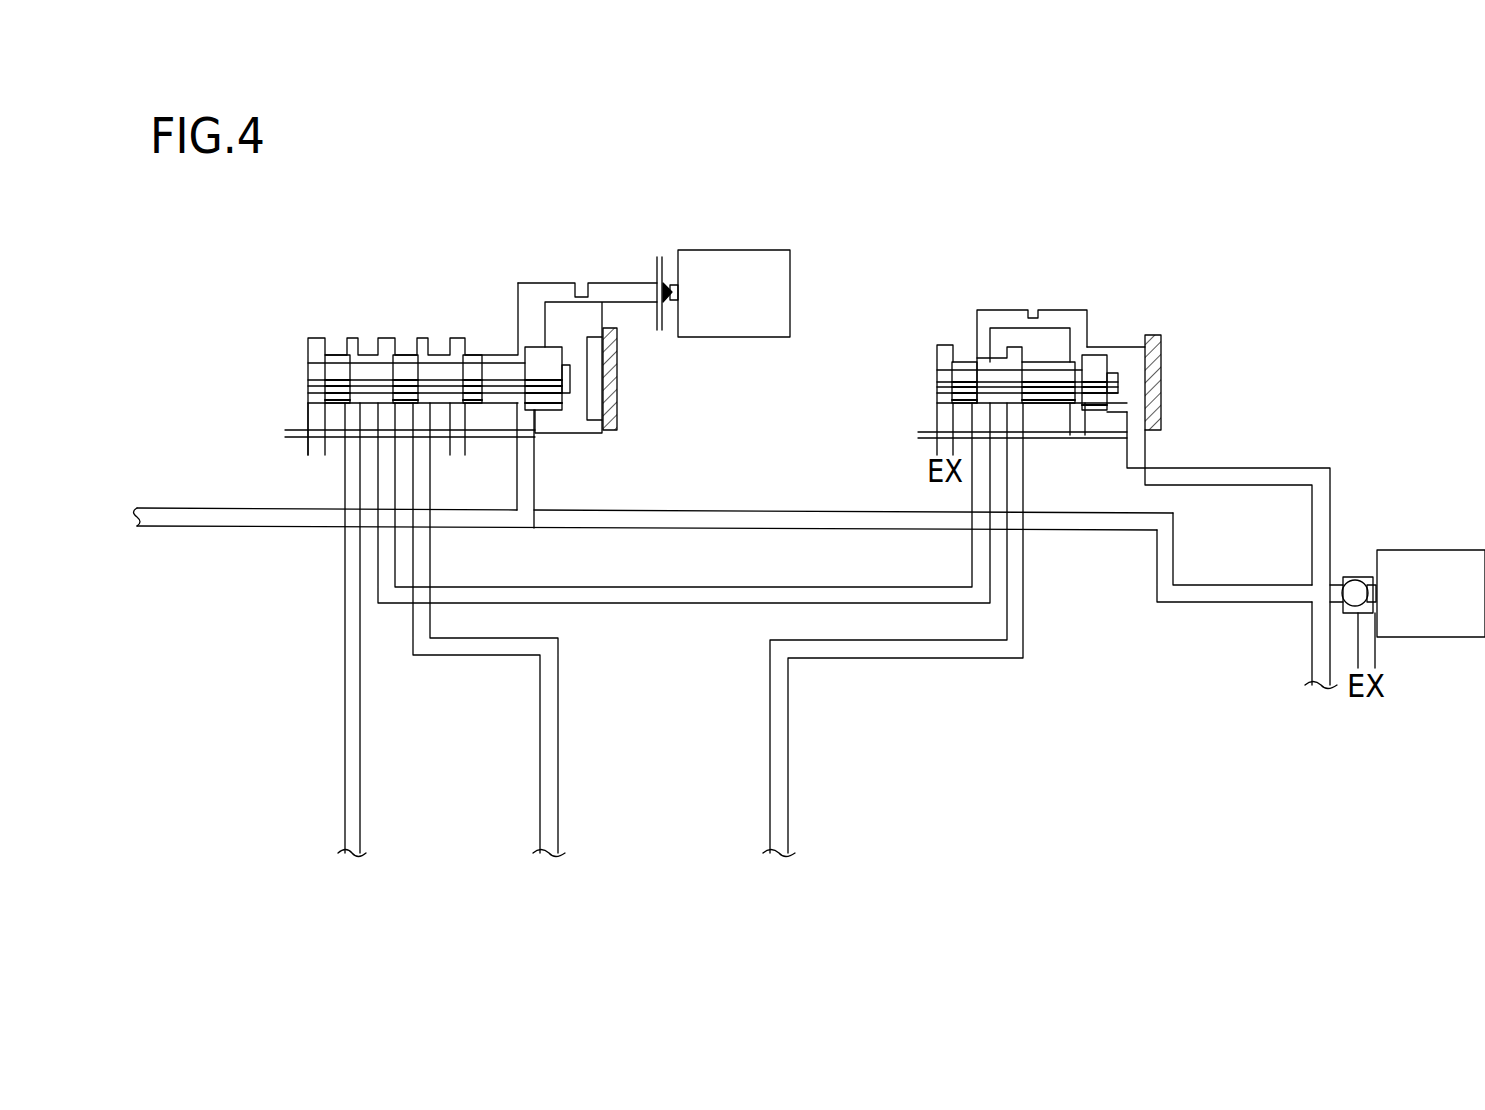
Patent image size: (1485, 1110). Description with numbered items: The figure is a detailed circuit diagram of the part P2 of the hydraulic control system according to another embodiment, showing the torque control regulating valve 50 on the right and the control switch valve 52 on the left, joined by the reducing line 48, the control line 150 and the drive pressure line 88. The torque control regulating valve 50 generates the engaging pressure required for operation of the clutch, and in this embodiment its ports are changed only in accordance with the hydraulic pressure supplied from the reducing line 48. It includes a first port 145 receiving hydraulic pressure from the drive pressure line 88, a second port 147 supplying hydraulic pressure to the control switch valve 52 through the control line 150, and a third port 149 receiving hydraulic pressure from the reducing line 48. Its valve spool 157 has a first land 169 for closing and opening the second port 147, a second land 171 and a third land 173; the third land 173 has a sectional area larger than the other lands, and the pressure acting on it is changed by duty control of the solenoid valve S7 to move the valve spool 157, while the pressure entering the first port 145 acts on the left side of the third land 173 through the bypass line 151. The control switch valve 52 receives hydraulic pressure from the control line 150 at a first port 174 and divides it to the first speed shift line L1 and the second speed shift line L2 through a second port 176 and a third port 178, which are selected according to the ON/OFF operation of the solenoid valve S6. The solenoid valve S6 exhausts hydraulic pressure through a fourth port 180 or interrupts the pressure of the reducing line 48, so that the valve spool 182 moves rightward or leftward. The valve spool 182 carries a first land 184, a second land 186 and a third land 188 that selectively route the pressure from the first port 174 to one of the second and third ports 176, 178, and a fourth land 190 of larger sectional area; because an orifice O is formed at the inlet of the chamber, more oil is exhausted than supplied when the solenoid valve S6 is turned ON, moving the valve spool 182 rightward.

The part P2 is at (982, 148).
The control switch valve 52 is at (627, 385).
The valve spool 182 is at (312, 373).
The second land 186 is at (338, 358).
The first land 184 is at (407, 363).
The third land 188 is at (472, 365).
The fourth land 190 is at (540, 355).
The orifice O is at (588, 295).
The solenoid valve S6 is at (734, 293).
The second port 176 is at (350, 405).
The first port 174 is at (387, 408).
The third port 178 is at (422, 407).
The fourth port 180 is at (525, 417).
The reducing line 48 is at (213, 518).
The control line 150 is at (667, 597).
The drive pressure line 88 is at (910, 652).
The first speed shift line L1 is at (348, 762).
The second speed shift line L2 is at (547, 765).
The torque control regulating valve 50 is at (1173, 388).
The valve spool 157 is at (940, 380).
The first land 169 is at (963, 368).
The bypass line 151 is at (1003, 316).
The second land 171 is at (1047, 370).
The third land 173 is at (1097, 365).
The second port 147 is at (980, 405).
The first port 145 is at (1013, 405).
The third port 149 is at (1137, 415).
The solenoid valve S7 is at (1407, 609).